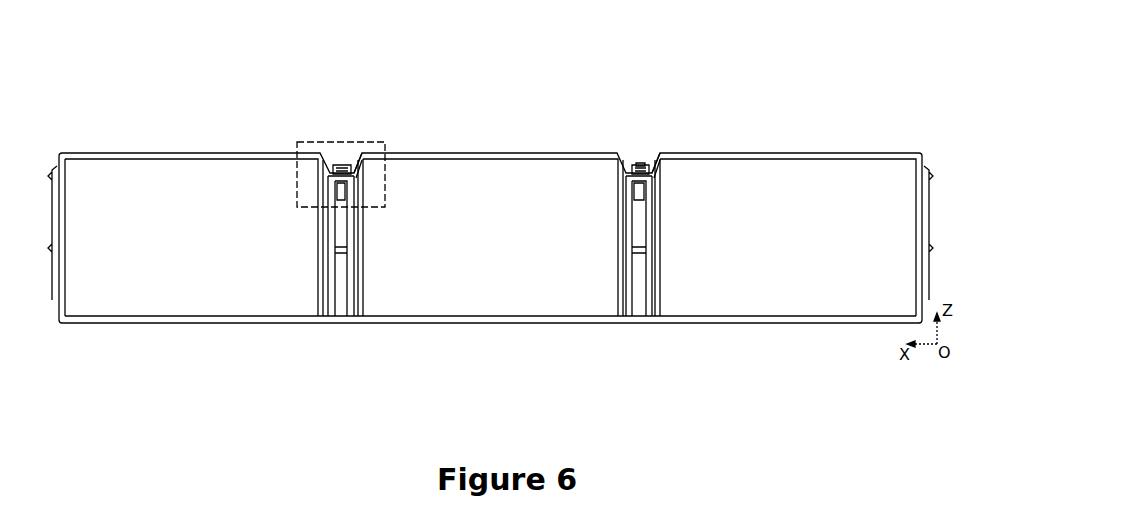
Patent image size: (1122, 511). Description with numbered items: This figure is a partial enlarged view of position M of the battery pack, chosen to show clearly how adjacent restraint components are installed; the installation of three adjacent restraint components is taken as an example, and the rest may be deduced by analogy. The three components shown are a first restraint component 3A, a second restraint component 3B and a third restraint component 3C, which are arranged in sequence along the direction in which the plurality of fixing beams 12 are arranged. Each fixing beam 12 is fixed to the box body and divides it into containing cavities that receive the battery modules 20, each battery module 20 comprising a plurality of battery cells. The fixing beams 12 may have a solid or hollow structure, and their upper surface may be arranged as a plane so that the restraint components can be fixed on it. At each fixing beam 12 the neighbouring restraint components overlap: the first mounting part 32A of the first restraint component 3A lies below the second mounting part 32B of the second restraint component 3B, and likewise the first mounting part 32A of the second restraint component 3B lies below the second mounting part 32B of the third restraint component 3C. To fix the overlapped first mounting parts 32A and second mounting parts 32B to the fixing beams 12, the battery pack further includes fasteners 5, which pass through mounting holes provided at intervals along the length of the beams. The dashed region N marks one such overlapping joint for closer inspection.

The position M is at (490, 177).
The first restraint component 3A is at (168, 153).
The second restraint component 3B is at (505, 153).
The third restraint component 3C is at (813, 153).
The battery module 20 is at (180, 304).
The fixing beam 12 is at (338, 304).
The first mounting part 32A is at (322, 160).
The second mounting part 32B is at (362, 165).
The fastener 5 is at (637, 163).
The enlarged region N is at (297, 151).